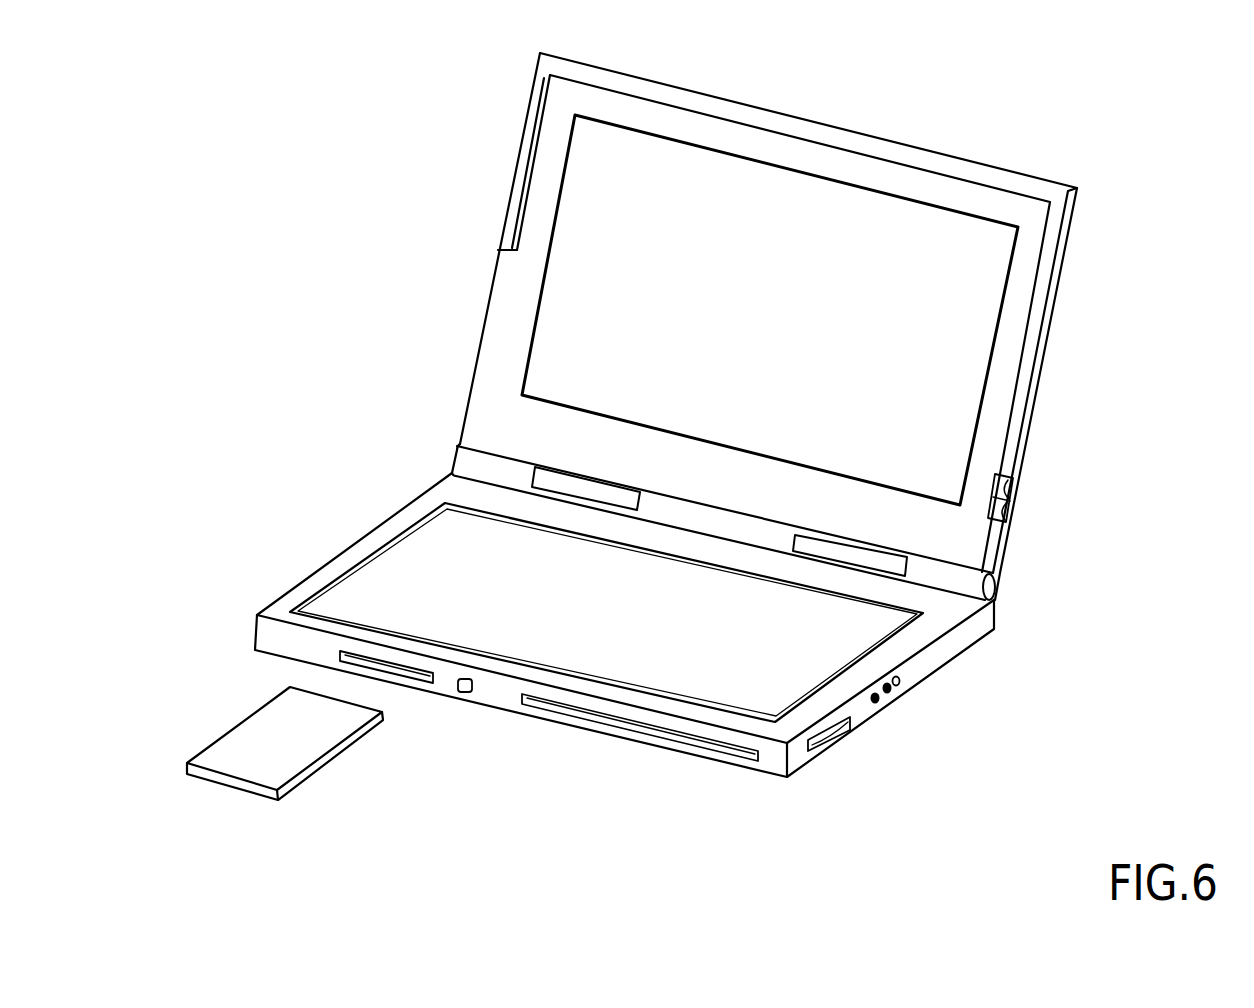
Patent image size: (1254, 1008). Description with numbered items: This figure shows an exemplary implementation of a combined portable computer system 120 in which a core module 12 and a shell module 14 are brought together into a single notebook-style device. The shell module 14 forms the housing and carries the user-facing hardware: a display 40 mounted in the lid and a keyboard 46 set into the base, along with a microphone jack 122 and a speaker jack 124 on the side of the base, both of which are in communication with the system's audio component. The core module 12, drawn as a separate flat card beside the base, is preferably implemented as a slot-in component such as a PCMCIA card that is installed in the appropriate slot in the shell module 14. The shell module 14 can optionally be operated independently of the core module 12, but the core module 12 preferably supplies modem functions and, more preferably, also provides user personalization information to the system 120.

The combined portable computer system 120 is at (918, 88).
The shell module 14 is at (942, 660).
The display 40 is at (577, 308).
The keyboard 46 is at (607, 637).
The core module 12 is at (318, 737).
The microphone jack 122 is at (875, 702).
The speaker jack 124 is at (888, 693).